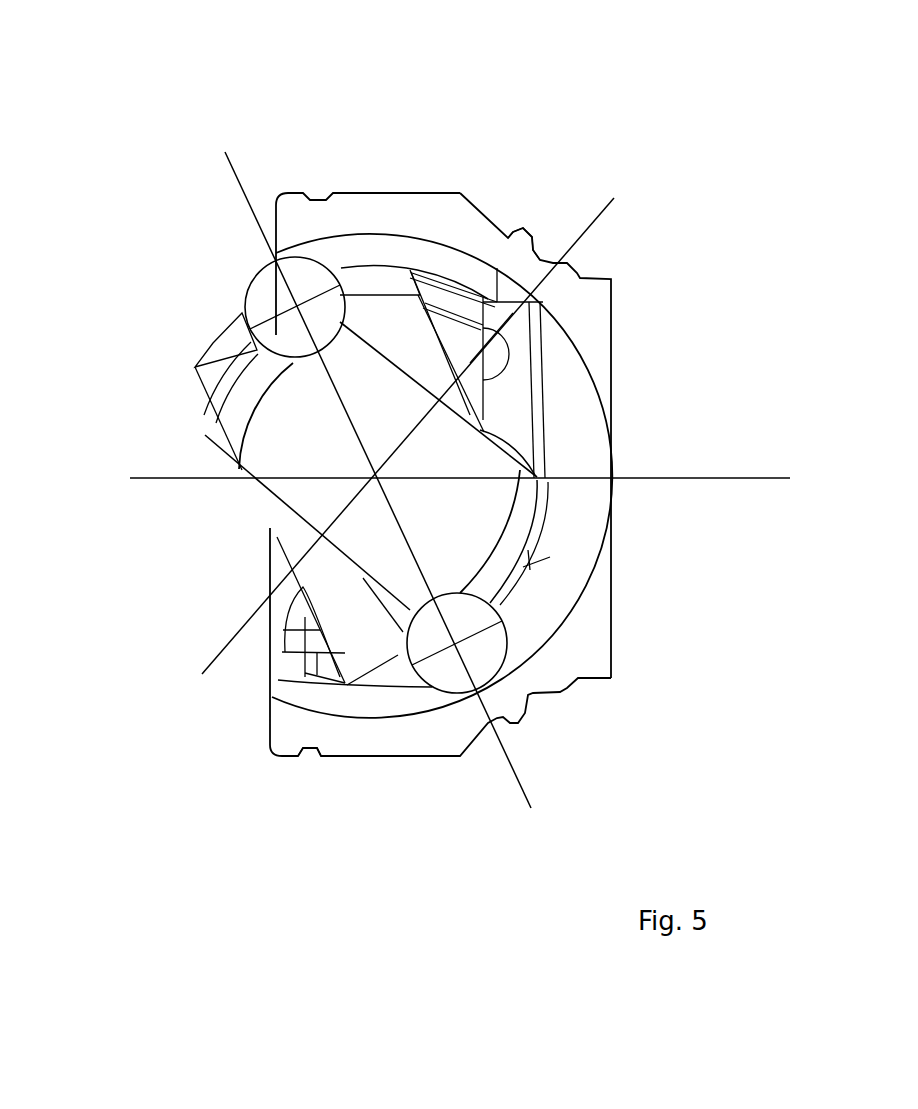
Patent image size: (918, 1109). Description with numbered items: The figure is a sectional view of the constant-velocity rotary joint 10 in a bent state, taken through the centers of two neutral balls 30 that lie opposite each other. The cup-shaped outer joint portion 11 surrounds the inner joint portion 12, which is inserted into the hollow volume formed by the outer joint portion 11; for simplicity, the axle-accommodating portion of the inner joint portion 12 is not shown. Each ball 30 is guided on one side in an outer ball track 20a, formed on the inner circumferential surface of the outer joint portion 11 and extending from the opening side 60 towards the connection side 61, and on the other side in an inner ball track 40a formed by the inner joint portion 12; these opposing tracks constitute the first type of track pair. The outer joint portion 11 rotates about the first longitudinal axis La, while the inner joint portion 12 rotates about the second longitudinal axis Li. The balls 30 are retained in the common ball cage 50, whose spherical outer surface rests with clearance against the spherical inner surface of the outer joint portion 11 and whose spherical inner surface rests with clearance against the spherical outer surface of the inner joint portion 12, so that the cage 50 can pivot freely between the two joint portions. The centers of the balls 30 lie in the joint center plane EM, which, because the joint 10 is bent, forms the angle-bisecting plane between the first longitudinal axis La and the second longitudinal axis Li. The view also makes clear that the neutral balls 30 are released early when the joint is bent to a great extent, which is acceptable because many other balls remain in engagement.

The constant-velocity rotary joint 10 is at (418, 142).
The outer joint portion 11 is at (455, 218).
The inner joint portion 12 is at (207, 433).
The outer ball track 20a is at (493, 220).
The ball 30 is at (267, 292).
The inner ball track 40a is at (270, 396).
The ball cage 50 is at (213, 343).
The opening side 60 is at (290, 678).
The connection side 61 is at (606, 331).
The joint center plane EM is at (226, 152).
The first longitudinal axis La is at (712, 478).
The second longitudinal axis Li is at (608, 203).